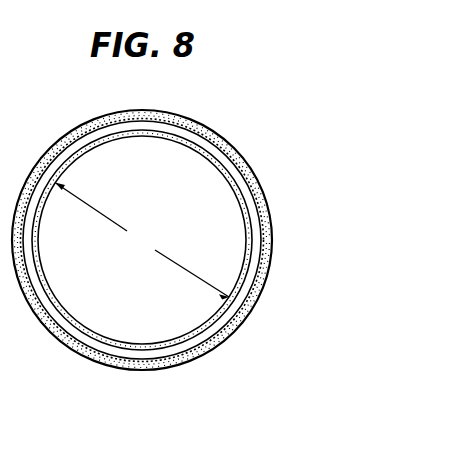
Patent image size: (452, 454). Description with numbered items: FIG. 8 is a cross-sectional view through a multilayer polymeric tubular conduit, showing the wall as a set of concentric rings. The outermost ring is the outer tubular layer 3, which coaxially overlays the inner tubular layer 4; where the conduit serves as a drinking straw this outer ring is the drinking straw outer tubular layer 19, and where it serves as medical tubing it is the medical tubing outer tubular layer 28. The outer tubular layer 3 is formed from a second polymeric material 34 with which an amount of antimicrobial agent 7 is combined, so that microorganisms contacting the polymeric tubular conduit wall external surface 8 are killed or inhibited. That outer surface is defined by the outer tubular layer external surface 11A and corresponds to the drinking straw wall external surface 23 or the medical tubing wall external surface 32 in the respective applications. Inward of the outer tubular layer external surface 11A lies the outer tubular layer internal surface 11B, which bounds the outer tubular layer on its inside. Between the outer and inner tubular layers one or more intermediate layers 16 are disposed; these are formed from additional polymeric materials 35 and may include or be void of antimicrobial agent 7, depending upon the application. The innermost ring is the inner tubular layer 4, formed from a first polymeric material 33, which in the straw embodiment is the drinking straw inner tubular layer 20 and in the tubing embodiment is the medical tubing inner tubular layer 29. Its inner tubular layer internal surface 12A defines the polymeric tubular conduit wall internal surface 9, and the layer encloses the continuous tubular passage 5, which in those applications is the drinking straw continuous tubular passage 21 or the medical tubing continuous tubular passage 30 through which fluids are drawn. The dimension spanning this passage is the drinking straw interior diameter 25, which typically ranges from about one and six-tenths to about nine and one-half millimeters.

The polymeric tubular conduit wall external surface 8 is at (157, 218).
The outer tubular layer external surface 11A is at (157, 218).
The drinking straw wall external surface 23 is at (157, 218).
The medical tubing wall external surface 32 is at (181, 110).
The outer tubular layer 3 is at (197, 238).
The antimicrobial agent 7 is at (197, 238).
The drinking straw outer tubular layer 19 is at (197, 238).
The medical tubing outer tubular layer 28 is at (197, 238).
The second polymeric material 34 is at (230, 151).
The inner tubular layer 4 is at (223, 240).
The drinking straw inner tubular layer 20 is at (223, 240).
The medical tubing inner tubular layer 29 is at (223, 240).
The first polymeric material 33 is at (243, 192).
The intermediate layer 16 is at (243, 175).
The additional polymeric material 35 is at (264, 222).
The outer tubular layer internal surface 11B is at (268, 247).
The polymeric tubular conduit wall internal surface 9 is at (194, 240).
The inner tubular layer internal surface 12A is at (238, 276).
The drinking straw interior diameter 25 is at (142, 241).
The continuous tubular passage 5 is at (142, 240).
The drinking straw continuous tubular passage 21 is at (142, 240).
The medical tubing continuous tubular passage 30 is at (153, 302).